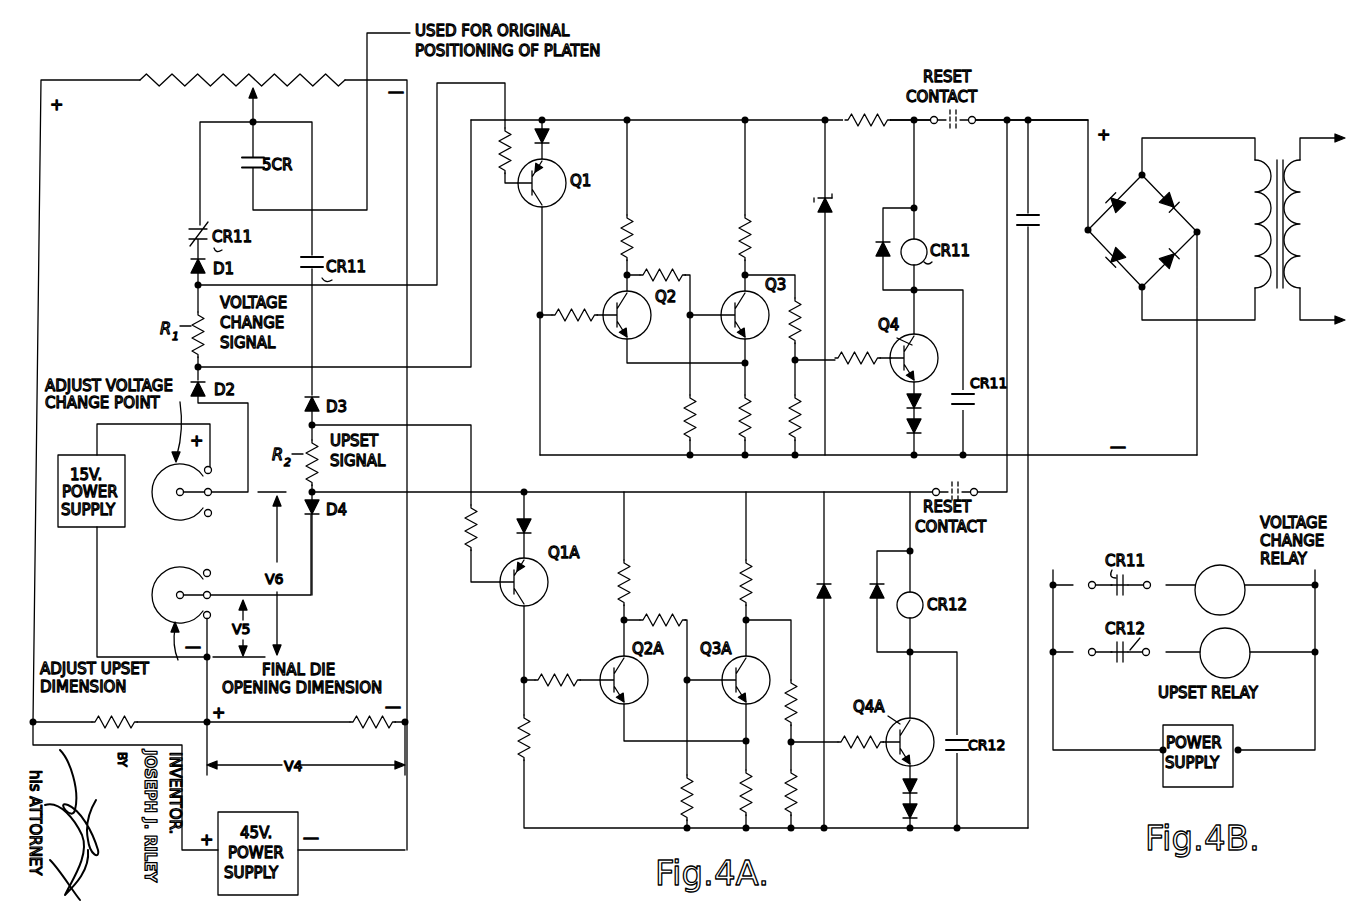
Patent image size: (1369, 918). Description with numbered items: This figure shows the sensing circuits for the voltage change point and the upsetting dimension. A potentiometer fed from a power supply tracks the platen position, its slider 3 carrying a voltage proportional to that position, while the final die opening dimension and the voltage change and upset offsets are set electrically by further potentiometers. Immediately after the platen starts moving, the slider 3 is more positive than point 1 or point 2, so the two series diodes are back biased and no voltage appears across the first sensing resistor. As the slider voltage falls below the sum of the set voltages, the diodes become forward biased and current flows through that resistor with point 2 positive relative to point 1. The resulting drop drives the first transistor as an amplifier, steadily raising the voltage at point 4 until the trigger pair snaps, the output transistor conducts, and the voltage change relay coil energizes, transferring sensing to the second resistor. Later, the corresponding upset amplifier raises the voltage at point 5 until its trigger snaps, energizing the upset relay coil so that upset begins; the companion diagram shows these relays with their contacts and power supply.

The point 1 is at (186, 286).
The point 2 is at (186, 366).
The slider 3 is at (262, 88).
The point 4 is at (538, 316).
The point 5 is at (516, 680).